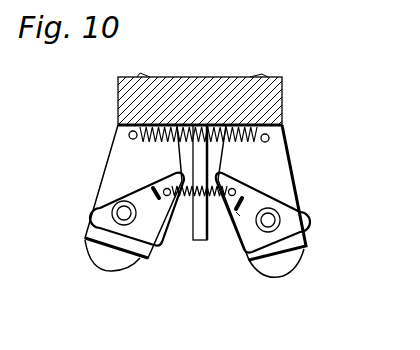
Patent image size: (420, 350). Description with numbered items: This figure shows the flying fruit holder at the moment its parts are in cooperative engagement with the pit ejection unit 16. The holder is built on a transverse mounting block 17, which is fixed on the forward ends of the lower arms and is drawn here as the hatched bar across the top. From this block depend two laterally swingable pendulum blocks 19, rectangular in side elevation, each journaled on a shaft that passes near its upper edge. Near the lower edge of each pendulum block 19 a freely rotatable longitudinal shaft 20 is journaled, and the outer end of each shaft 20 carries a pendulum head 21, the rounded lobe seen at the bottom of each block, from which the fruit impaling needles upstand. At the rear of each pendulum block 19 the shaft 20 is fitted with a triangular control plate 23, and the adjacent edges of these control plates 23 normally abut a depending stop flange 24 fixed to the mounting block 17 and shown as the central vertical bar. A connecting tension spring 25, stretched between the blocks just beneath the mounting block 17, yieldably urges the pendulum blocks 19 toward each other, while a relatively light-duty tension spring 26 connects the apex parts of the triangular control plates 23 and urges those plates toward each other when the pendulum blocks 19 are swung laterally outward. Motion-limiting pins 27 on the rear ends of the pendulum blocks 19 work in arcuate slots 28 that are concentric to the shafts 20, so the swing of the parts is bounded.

The pit ejection unit 16 is at (317, 233).
The mounting block 17 is at (282, 80).
The pendulum block 19 is at (117, 153).
The longitudinal shaft 20 is at (123, 215).
The pendulum head 21 is at (105, 262).
The triangular control plate 23 is at (135, 262).
The stop flange 24 is at (200, 242).
The tension spring 25 is at (258, 127).
The light-duty tension spring 26 is at (190, 192).
The motion-limiting pin 27 is at (150, 192).
The arcuate slot 28 is at (238, 216).